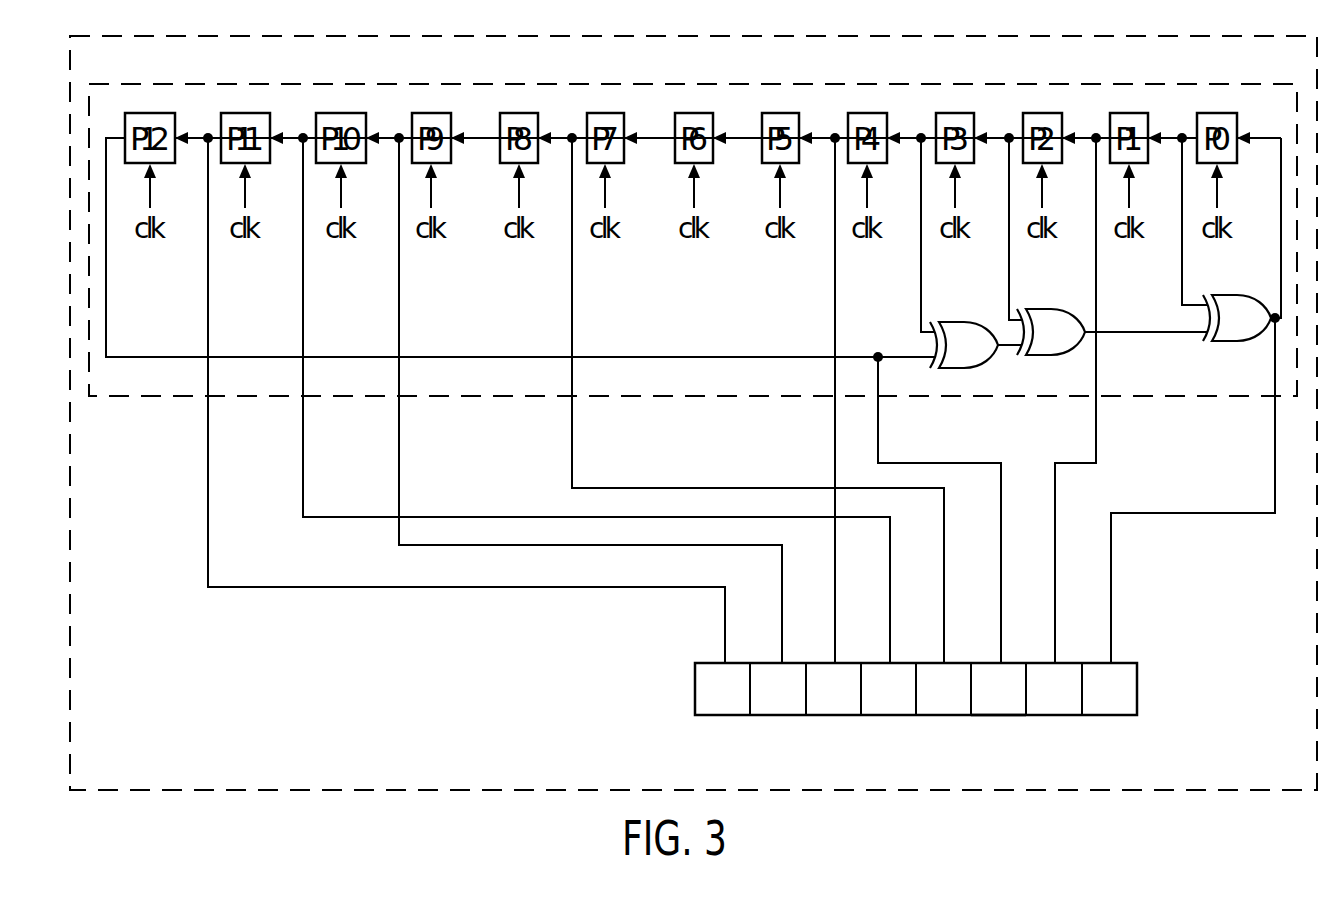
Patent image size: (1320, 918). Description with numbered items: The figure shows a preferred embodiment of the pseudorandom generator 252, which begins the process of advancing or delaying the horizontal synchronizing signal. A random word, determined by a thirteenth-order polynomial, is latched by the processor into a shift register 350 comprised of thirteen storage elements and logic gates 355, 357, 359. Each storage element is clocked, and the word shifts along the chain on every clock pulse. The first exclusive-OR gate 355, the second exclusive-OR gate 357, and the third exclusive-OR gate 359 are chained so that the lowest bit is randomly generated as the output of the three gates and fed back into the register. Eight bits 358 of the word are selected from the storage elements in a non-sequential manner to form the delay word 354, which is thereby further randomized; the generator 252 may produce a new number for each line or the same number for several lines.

The pseudorandom generator 252 is at (888, 32).
The shift register 350 is at (1044, 80).
The delay word 354 is at (1140, 690).
The first exclusive-OR gate 355 is at (953, 321).
The second exclusive-OR gate 357 is at (1058, 308).
The bits 358 is at (998, 717).
The third exclusive-OR gate 359 is at (1221, 295).